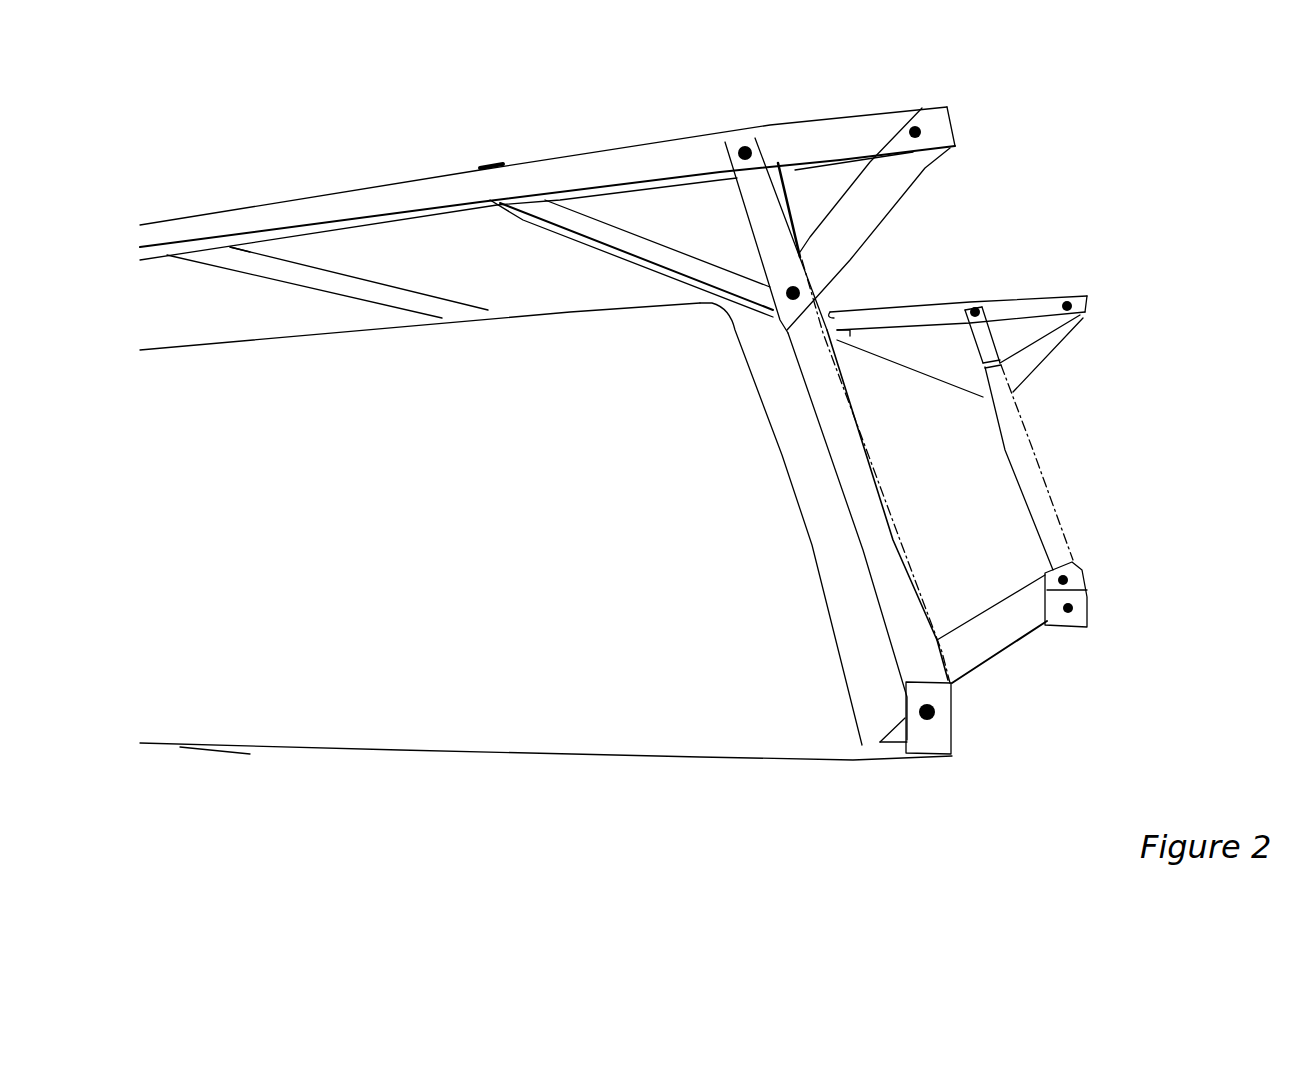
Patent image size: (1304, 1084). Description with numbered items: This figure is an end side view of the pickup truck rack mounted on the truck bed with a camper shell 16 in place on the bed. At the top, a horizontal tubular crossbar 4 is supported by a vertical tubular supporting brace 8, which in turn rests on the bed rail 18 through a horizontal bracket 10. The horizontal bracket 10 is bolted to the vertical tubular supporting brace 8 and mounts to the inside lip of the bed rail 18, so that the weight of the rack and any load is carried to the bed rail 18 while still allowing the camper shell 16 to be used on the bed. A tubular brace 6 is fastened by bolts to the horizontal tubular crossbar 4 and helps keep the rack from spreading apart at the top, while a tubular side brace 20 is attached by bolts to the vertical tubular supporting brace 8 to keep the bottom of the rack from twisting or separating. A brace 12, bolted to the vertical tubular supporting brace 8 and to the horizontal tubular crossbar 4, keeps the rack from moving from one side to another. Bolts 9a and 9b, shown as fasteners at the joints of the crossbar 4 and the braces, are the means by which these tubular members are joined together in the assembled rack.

The horizontal tubular crossbar 4 is at (287, 208).
The tubular brace 6 is at (370, 288).
The vertical tubular supporting brace 8 is at (1030, 473).
The bolt 9a is at (1067, 302).
The bolt 9b is at (745, 147).
The horizontal bracket 10 is at (900, 747).
The brace 12 is at (917, 110).
The camper shell 16 is at (807, 677).
The bed rail 18 is at (858, 762).
The tubular side brace 20 is at (1012, 618).